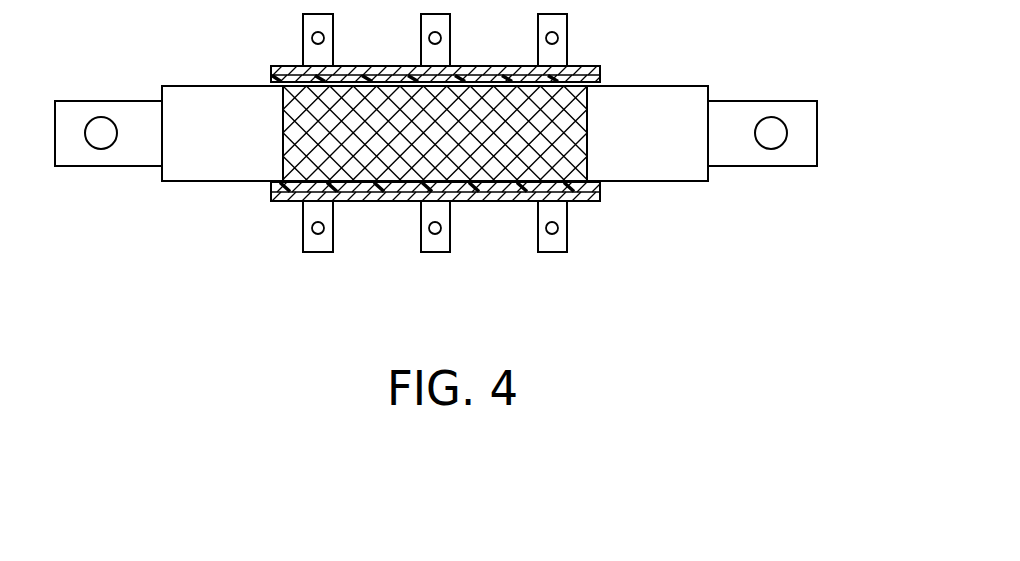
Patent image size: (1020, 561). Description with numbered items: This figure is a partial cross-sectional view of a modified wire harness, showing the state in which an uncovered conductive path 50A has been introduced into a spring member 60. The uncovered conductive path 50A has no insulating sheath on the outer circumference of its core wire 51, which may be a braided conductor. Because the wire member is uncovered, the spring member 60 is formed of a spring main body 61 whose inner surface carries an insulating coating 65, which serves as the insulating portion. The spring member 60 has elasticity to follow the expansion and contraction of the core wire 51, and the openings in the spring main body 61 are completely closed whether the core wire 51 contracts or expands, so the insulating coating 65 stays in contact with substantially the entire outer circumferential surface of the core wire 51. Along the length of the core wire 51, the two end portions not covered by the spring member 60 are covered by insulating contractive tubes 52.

The uncovered conductive path 50A is at (668, 71).
The core wire 51 is at (380, 112).
The insulating contractive tube 52 is at (208, 168).
The spring member 60 is at (500, 295).
The spring main body 61 is at (397, 196).
The insulating coating 65 is at (480, 186).